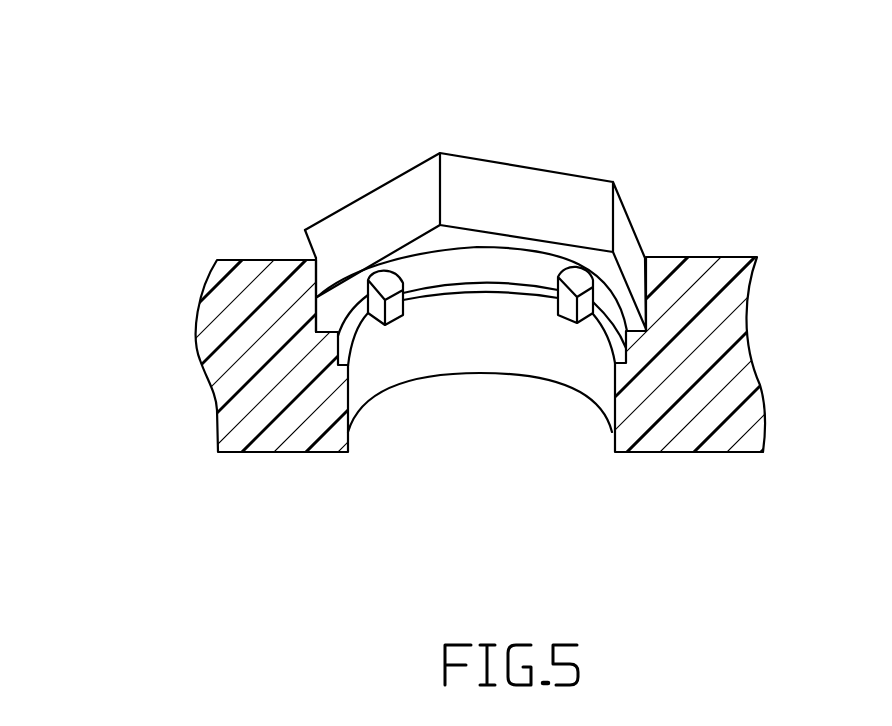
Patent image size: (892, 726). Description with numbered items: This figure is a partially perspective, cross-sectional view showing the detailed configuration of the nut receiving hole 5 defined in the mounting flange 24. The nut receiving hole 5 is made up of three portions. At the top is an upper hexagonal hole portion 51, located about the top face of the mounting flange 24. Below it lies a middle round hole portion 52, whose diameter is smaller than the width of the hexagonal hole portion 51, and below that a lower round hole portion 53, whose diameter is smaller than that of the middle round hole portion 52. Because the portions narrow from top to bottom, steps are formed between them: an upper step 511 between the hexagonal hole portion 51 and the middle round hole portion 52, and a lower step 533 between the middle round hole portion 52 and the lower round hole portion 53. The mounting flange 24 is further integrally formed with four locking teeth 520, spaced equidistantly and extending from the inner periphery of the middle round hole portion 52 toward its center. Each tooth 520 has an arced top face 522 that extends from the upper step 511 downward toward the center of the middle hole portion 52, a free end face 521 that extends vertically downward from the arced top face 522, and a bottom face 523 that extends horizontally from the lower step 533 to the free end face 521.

The nut receiving hole 5 is at (503, 282).
The upper hexagonal hole portion 51 is at (537, 190).
The upper step 511 is at (420, 245).
The middle round hole portion 52 is at (540, 267).
The locking tooth 520 is at (592, 266).
The free end face 521 is at (393, 313).
The arced top face 522 is at (403, 293).
The bottom face 523 is at (372, 317).
The lower round hole portion 53 is at (348, 412).
The lower step 533 is at (496, 288).
The mounting flange 24 is at (243, 365).